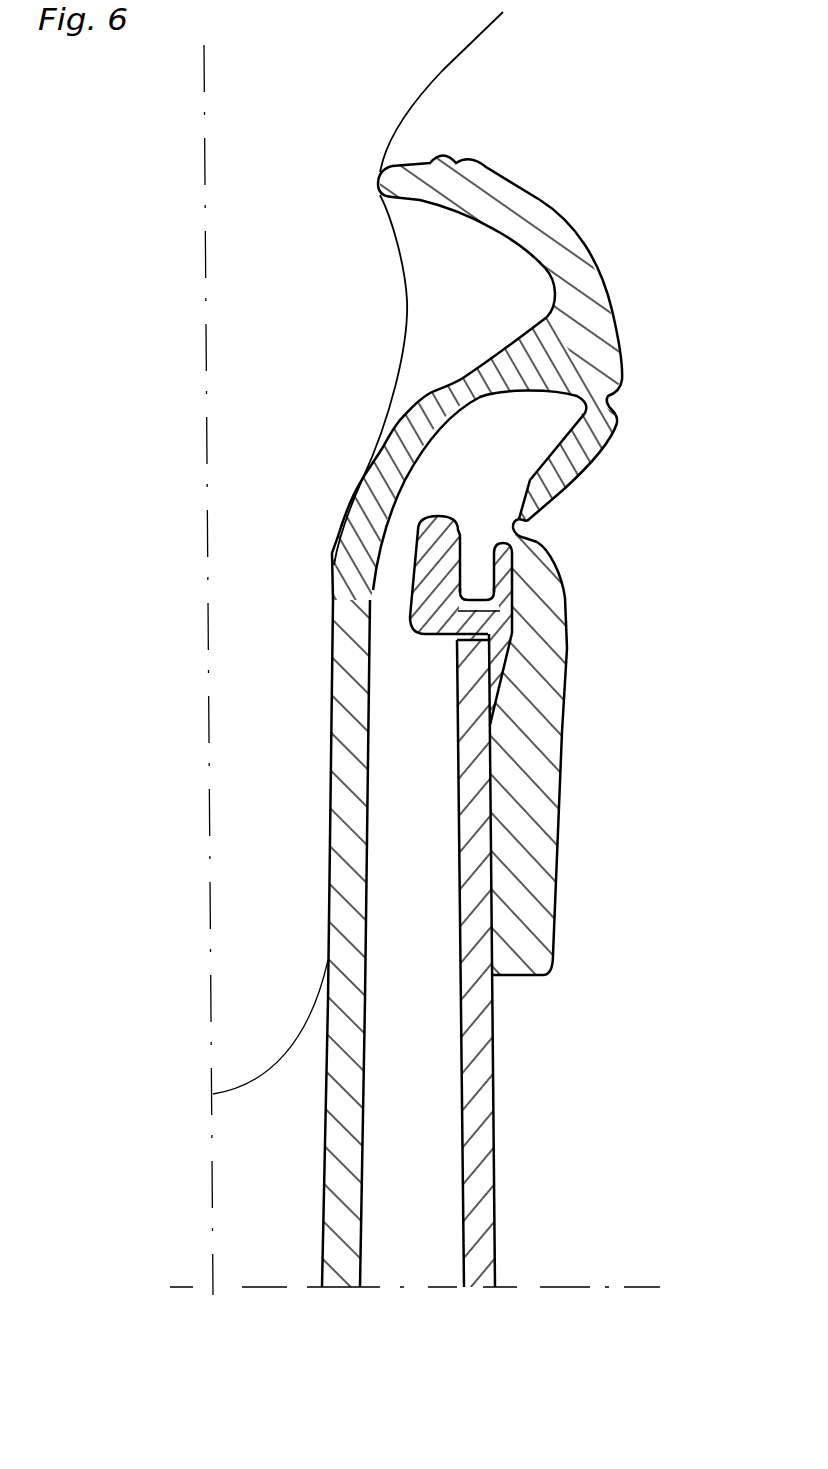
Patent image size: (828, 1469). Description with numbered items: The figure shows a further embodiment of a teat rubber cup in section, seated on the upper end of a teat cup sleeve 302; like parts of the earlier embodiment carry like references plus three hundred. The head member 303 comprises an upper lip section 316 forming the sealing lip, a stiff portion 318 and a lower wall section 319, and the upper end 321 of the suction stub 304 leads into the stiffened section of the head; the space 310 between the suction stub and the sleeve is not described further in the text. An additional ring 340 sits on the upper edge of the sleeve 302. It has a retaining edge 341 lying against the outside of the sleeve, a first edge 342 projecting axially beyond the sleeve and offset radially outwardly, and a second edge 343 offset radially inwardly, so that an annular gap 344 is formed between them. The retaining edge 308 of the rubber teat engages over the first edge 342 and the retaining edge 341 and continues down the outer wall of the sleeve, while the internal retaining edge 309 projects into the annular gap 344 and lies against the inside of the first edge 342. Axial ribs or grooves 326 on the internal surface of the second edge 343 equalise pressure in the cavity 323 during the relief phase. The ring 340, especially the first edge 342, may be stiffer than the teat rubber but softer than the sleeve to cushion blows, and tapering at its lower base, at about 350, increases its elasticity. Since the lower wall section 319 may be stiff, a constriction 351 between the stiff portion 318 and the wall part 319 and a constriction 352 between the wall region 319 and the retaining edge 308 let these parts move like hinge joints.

The teat cup sleeve 302 is at (481, 1045).
The head member 303 is at (563, 169).
The suction stub 304 is at (345, 1159).
The retaining edge 308 is at (552, 888).
The internal retaining edge 309 is at (462, 631).
The space between walls 310 is at (440, 1109).
The upper lip section 316 is at (528, 200).
The stiff portion 318 is at (605, 330).
The lower wall section 319 is at (567, 458).
The upper end of the suction stub 321 is at (547, 373).
The cavity 323 is at (511, 467).
The ribs or grooves 326 is at (425, 567).
The ring 340 is at (513, 629).
The retaining edge 341 is at (464, 690).
The first edge 342 is at (514, 556).
The second edge 343 is at (445, 585).
The annular gap 344 is at (542, 655).
The lower base of the first edge 350 is at (474, 612).
The constriction 351 is at (611, 402).
The constriction 352 is at (527, 528).